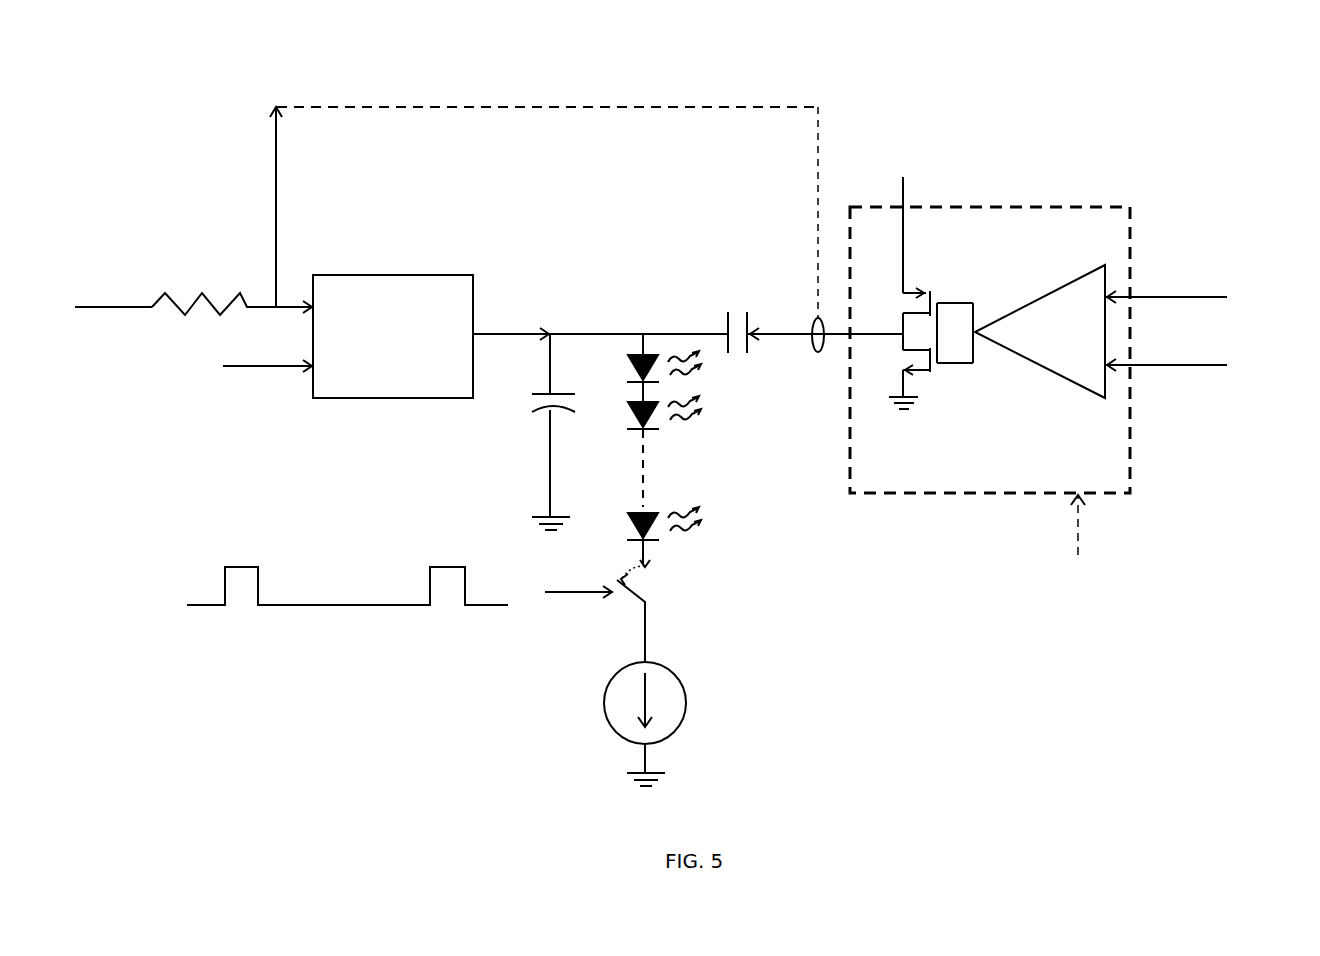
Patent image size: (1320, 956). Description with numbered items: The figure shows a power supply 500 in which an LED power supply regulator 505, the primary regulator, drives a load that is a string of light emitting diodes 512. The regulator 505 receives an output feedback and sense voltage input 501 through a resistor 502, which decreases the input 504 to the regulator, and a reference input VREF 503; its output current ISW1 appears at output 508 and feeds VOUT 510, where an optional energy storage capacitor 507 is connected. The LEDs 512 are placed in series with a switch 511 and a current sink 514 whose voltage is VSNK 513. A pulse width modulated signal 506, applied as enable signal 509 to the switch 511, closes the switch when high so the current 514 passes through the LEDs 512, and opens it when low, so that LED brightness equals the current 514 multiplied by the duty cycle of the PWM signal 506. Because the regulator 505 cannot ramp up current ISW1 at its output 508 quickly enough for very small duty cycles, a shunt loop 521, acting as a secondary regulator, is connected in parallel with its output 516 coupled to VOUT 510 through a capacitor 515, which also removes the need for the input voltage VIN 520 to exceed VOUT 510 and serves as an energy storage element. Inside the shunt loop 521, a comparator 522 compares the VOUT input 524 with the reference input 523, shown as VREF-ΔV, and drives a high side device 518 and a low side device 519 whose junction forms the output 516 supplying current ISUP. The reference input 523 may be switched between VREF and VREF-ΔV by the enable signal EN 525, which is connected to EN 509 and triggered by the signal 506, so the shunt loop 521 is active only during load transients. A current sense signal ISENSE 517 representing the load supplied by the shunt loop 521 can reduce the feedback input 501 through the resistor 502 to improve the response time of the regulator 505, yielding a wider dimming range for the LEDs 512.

The power supply 500 is at (1286, 140).
The output feedback and sense voltage input 501 is at (122, 333).
The resistor 502 is at (193, 287).
The reference input VREF 503 is at (250, 400).
The input to the LED power supply regulator 504 is at (278, 195).
The LED power supply regulator 505 is at (385, 273).
The PWM dimming signal 506 is at (440, 563).
The energy storage capacitor 507 is at (523, 403).
The output current ISW1 508 is at (512, 297).
The enable signal EN 509 is at (555, 627).
The VOUT 510 is at (630, 307).
The switch 511 is at (642, 587).
The string of light emitting diodes 512 is at (690, 433).
The VSNK 513 is at (713, 643).
The current sink 514 is at (693, 710).
The coupling capacitor 515 is at (727, 307).
The shunt loop output 516 is at (787, 377).
The current sense signal ISENSE 517 is at (777, 172).
The high side device 518 is at (907, 305).
The low side device 519 is at (892, 363).
The input voltage VIN 520 is at (900, 148).
The shunt loop 521 is at (1005, 197).
The comparator 522 is at (1043, 375).
The reference input 523 is at (1177, 262).
The input to comparator 524 is at (1185, 397).
The enable signal EN 525 is at (1035, 552).